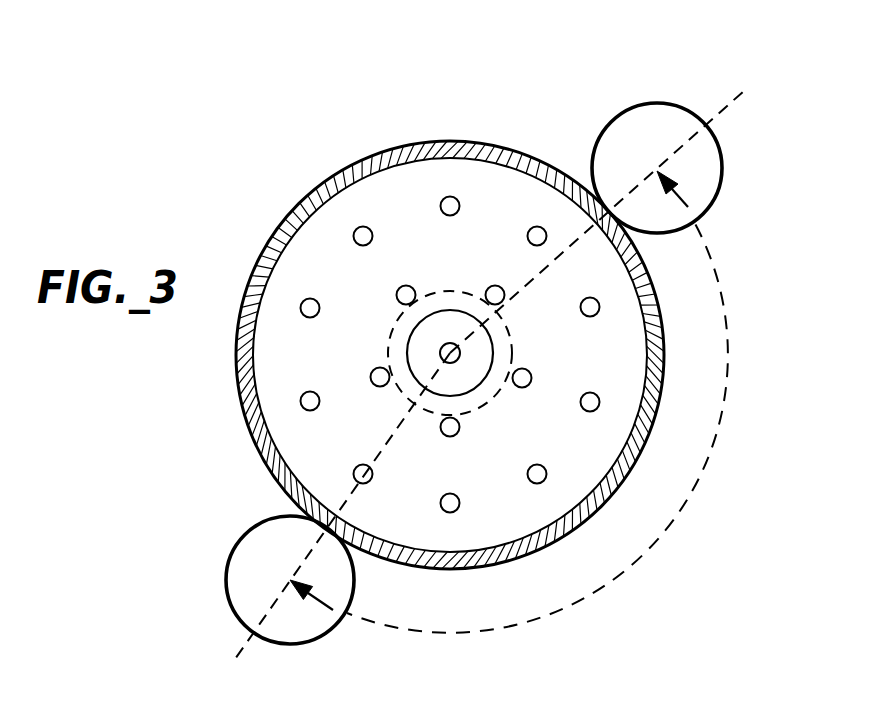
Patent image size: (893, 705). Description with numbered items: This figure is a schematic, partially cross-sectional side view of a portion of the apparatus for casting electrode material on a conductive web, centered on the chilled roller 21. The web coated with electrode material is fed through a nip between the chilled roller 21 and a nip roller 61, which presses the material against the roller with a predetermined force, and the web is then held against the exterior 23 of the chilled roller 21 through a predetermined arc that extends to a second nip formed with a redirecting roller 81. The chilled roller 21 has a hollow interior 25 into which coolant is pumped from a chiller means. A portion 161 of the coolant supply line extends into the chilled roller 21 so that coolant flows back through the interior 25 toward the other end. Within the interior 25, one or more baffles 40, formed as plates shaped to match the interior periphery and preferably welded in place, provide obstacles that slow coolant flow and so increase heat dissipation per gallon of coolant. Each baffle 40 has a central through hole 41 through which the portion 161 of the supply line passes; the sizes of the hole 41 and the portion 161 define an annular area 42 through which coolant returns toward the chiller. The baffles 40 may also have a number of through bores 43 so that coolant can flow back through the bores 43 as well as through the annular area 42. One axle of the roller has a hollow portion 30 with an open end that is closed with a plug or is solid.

The chilled roller 21 is at (292, 173).
The exterior of the chilled roller 23 is at (410, 144).
The hollow interior 25 is at (450, 158).
The baffles 40 is at (466, 249).
The central through hole 41 is at (493, 350).
The annular area 42 is at (420, 343).
The through bores 43 is at (317, 316).
The hollow portion 30 is at (388, 414).
The portion of coolant supply line 161 is at (452, 362).
The nip roller 61 is at (229, 589).
The redirecting roller 81 is at (682, 104).